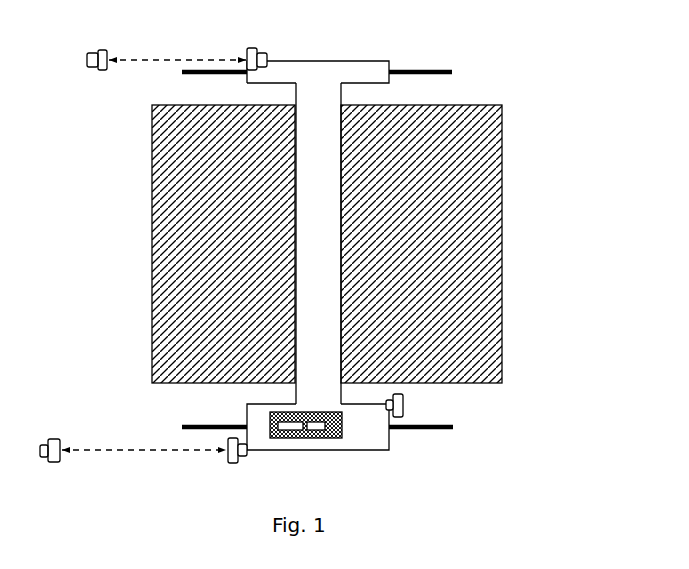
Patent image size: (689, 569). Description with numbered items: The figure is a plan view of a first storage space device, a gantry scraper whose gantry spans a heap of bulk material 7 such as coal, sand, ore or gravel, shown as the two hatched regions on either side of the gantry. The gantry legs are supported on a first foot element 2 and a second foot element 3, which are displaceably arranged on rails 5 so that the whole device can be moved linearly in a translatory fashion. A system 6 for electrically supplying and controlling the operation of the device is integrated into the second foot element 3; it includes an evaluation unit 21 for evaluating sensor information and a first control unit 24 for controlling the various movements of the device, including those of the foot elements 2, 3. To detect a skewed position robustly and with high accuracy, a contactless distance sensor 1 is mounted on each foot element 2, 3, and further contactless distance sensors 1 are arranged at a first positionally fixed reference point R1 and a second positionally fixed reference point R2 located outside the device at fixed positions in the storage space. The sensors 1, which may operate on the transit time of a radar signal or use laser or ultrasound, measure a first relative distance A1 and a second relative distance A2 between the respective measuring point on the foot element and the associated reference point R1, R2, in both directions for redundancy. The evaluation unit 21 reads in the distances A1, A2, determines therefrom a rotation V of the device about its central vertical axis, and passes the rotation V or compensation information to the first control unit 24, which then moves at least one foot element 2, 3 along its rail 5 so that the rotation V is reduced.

The contactless distance sensor 1 is at (100, 72).
The first foot element 2 is at (360, 61).
The second foot element 3 is at (372, 451).
The rails 5 is at (430, 72).
The system for electrically supplying and controlling 6 is at (301, 430).
The heap of bulk material 7 is at (460, 105).
The evaluation unit 21 is at (280, 433).
The first control unit 24 is at (314, 435).
The first relative distance A1 is at (177, 53).
The second relative distance A2 is at (144, 441).
The first positionally fixed reference point R1 is at (82, 55).
The second positionally fixed reference point R2 is at (38, 459).
The rotation V is at (327, 212).